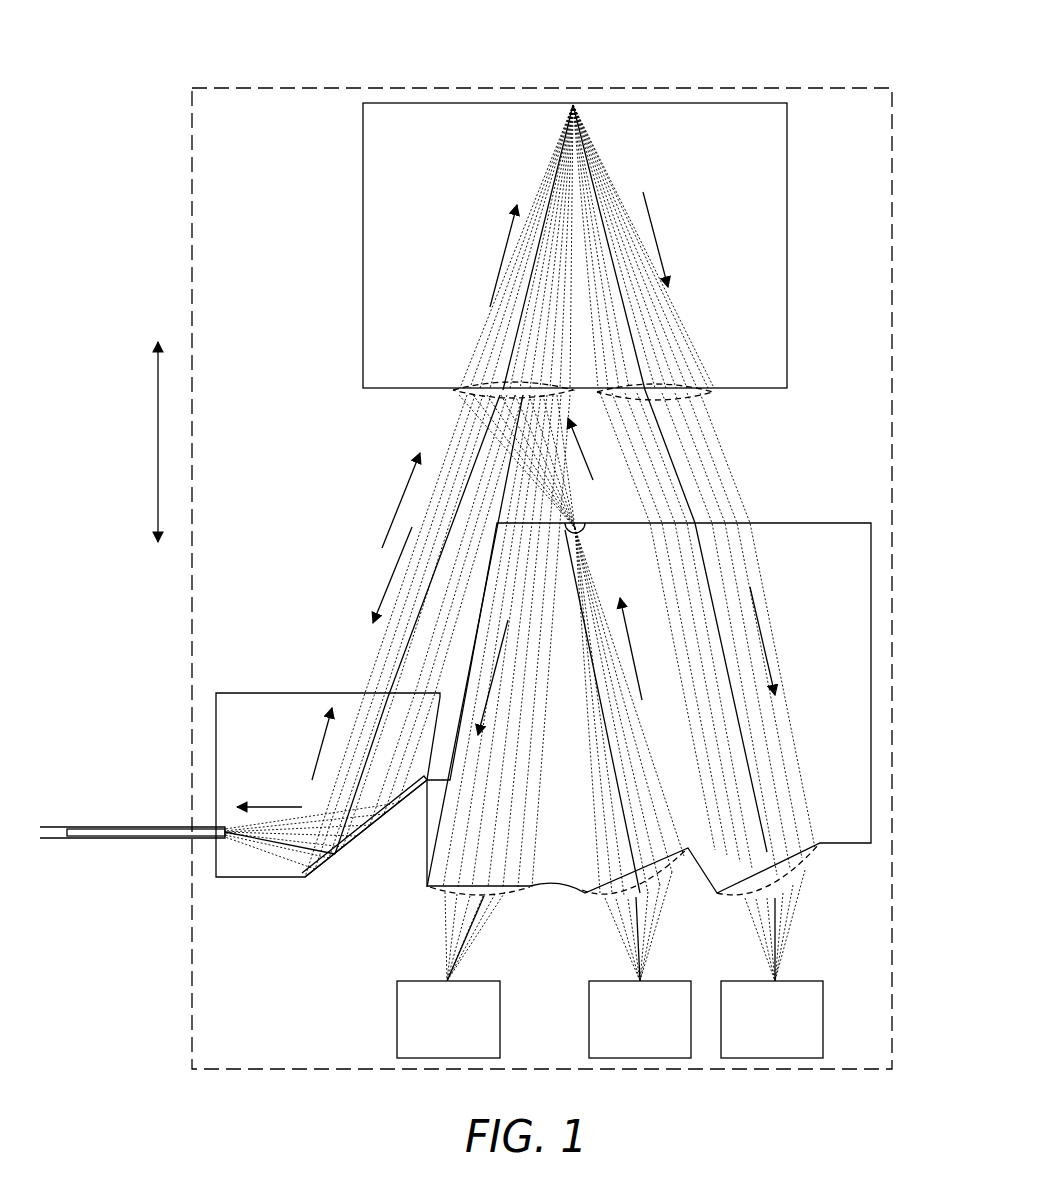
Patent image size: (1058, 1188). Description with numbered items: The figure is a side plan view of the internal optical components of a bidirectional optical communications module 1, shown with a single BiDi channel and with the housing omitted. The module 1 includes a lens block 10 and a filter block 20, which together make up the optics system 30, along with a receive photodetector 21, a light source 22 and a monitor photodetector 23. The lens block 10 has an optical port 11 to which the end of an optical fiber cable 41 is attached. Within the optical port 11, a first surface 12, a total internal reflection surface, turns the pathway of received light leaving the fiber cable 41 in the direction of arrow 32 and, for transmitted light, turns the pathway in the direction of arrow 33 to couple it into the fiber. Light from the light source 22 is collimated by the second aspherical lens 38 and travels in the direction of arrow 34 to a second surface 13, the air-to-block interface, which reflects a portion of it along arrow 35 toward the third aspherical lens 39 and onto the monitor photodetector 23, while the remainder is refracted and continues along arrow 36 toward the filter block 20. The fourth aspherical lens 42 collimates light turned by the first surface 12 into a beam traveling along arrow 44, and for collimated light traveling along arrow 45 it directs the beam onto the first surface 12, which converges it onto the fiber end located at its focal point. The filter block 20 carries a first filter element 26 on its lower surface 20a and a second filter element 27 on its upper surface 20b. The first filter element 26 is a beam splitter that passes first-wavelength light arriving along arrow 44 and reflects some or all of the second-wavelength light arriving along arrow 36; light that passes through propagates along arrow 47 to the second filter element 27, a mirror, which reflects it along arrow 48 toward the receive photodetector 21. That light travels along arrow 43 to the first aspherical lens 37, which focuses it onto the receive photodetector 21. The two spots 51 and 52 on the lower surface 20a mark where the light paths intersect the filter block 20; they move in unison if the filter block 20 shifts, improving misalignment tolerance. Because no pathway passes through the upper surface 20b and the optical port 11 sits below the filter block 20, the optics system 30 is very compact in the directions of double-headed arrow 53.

The bidirectional optical communications module 1 is at (183, 118).
The lens block 10 is at (780, 545).
The optical port 11 is at (213, 808).
The first surface 12 is at (365, 830).
The second surface 13 is at (583, 525).
The filter block 20 is at (787, 242).
The lower surface 20a is at (740, 378).
The upper surface 20b is at (722, 113).
The receive photodetector 21 is at (790, 980).
The light source 22 is at (668, 980).
The monitor photodetector 23 is at (482, 980).
The first filter element 26 is at (572, 384).
The second filter element 27 is at (573, 105).
The optics system 30 is at (806, 88).
The arrow 32 is at (318, 730).
The arrow 33 is at (300, 805).
The arrow 34 is at (625, 650).
The arrow 35 is at (500, 652).
The arrow 36 is at (585, 455).
The first aspherical lens 37 is at (775, 895).
The second aspherical lens 38 is at (645, 897).
The third aspherical lens 39 is at (485, 895).
The optical fiber cable 41 is at (145, 827).
The fourth aspherical lens 42 is at (400, 690).
The arrow 43 is at (770, 640).
The arrow 44 is at (390, 487).
The arrow 45 is at (395, 563).
The arrow 47 is at (503, 243).
The arrow 48 is at (660, 228).
The spot 51 is at (480, 398).
The spot 52 is at (692, 400).
The double-headed arrow 53 is at (158, 430).